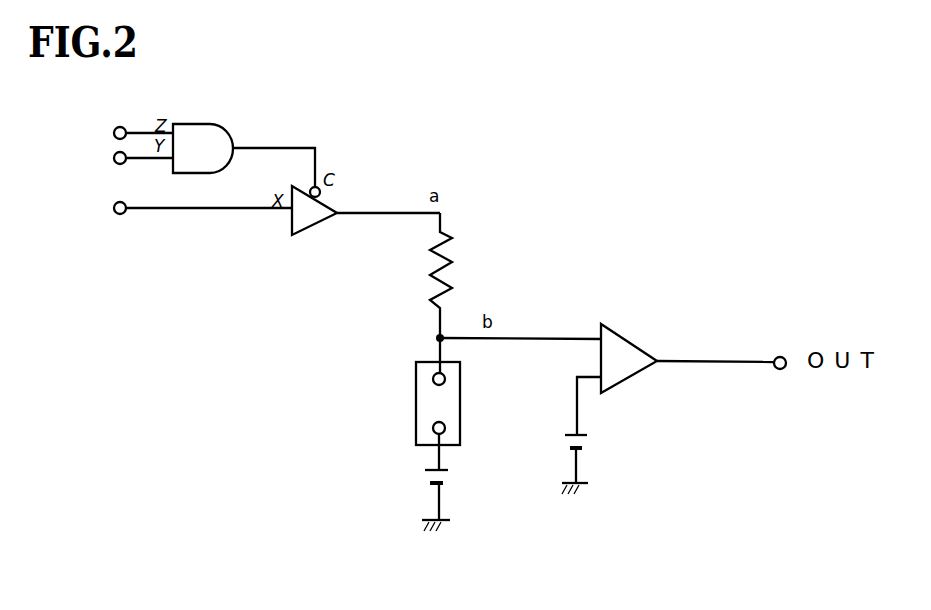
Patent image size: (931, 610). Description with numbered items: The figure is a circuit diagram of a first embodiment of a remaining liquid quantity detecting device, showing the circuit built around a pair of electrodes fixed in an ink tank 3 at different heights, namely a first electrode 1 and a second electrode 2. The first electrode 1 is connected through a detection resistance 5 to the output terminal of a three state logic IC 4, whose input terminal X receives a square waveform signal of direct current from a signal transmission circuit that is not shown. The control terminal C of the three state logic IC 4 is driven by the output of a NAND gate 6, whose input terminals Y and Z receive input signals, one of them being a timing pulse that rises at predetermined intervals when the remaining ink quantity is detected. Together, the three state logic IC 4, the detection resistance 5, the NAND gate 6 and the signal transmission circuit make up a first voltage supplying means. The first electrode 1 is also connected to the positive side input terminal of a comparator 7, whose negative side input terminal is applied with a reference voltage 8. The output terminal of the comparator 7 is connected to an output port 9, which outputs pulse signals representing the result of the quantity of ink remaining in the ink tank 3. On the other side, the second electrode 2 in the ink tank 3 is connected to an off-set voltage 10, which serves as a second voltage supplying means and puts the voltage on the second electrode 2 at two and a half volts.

The first electrode 1 is at (433, 377).
The second electrode 2 is at (432, 428).
The ink tank 3 is at (462, 404).
The three state logic IC 4 is at (287, 220).
The detection resistance 5 is at (430, 270).
The NAND gate 6 is at (222, 137).
The comparator 7 is at (632, 348).
The reference voltage 8 is at (560, 442).
The output port 9 is at (780, 357).
The off-set voltage 10 is at (455, 472).